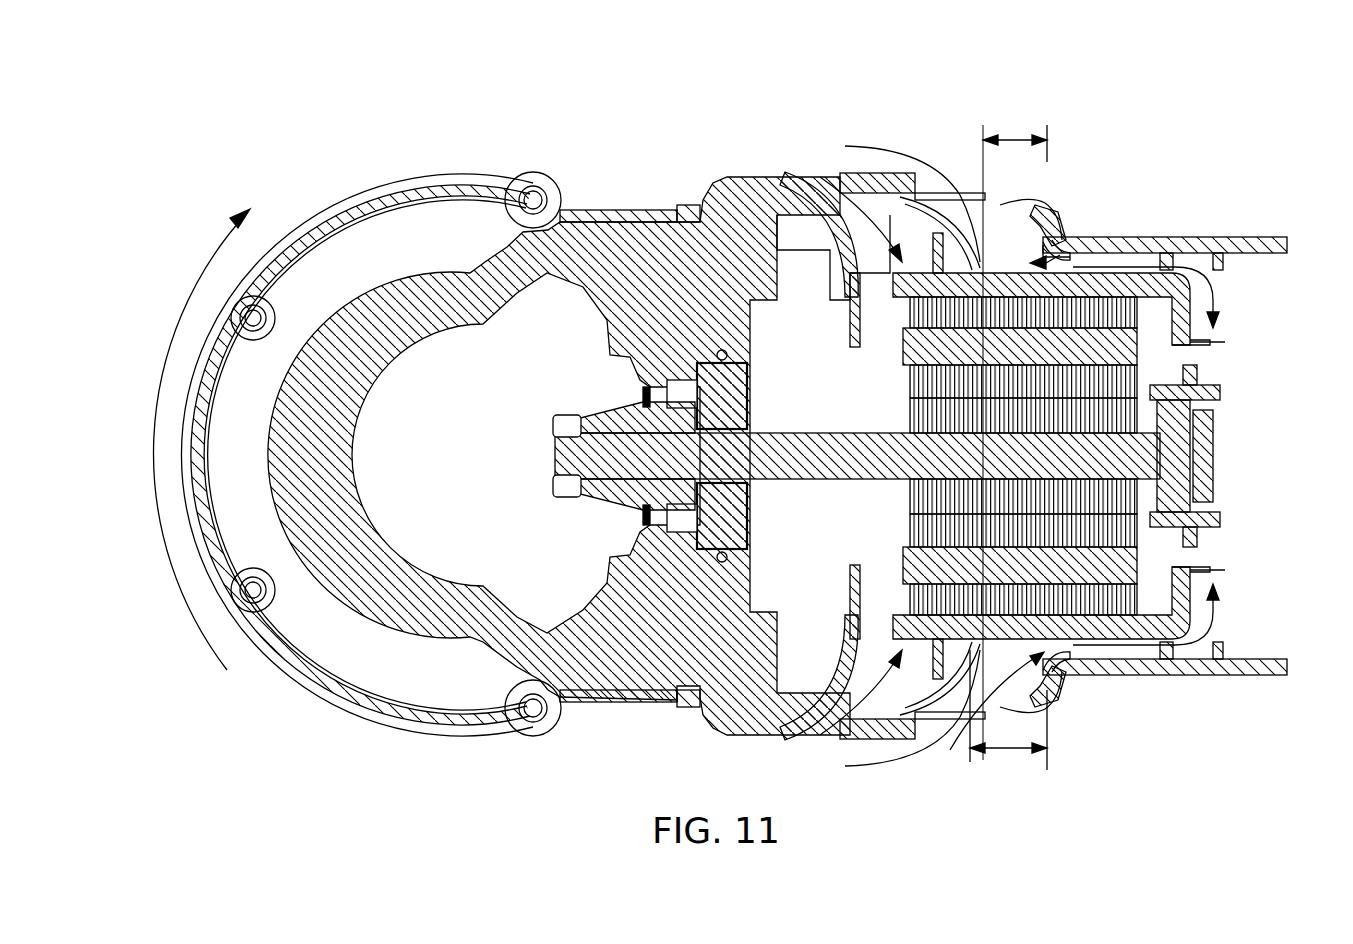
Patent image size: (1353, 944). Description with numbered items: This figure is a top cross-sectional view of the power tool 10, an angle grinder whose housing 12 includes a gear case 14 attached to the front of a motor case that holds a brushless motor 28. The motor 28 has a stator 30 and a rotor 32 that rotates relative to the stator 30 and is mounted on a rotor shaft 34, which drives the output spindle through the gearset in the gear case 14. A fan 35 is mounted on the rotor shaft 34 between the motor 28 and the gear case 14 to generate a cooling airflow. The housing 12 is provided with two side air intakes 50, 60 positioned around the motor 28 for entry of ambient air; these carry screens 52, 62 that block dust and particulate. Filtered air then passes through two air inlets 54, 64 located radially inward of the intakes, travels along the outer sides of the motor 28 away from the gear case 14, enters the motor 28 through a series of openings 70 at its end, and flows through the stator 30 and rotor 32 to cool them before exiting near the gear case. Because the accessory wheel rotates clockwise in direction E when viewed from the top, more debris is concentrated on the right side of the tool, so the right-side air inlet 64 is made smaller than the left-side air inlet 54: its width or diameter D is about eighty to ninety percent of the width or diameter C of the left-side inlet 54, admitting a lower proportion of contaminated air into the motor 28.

The power tool 10 is at (1178, 128).
The housing 12 is at (1224, 198).
The gear case 14 is at (482, 125).
The motor 28 is at (845, 702).
The stator 30 is at (1137, 595).
The rotor 32 is at (1110, 527).
The rotor shaft 34 is at (1140, 454).
The fan 35 is at (790, 262).
The left-side air intake 50 is at (1087, 697).
The screen 52 is at (1045, 702).
The left-side air inlet 54 is at (1048, 692).
The right-side air intake 60 is at (1072, 195).
The screen 62 is at (1022, 197).
The right-side air inlet 64 is at (1062, 222).
The openings 70 is at (1236, 356).
The width or diameter of left-side air inlet C is at (1013, 750).
The width or diameter of right-side air inlet D is at (1013, 140).
The direction of wheel rotation E is at (158, 452).